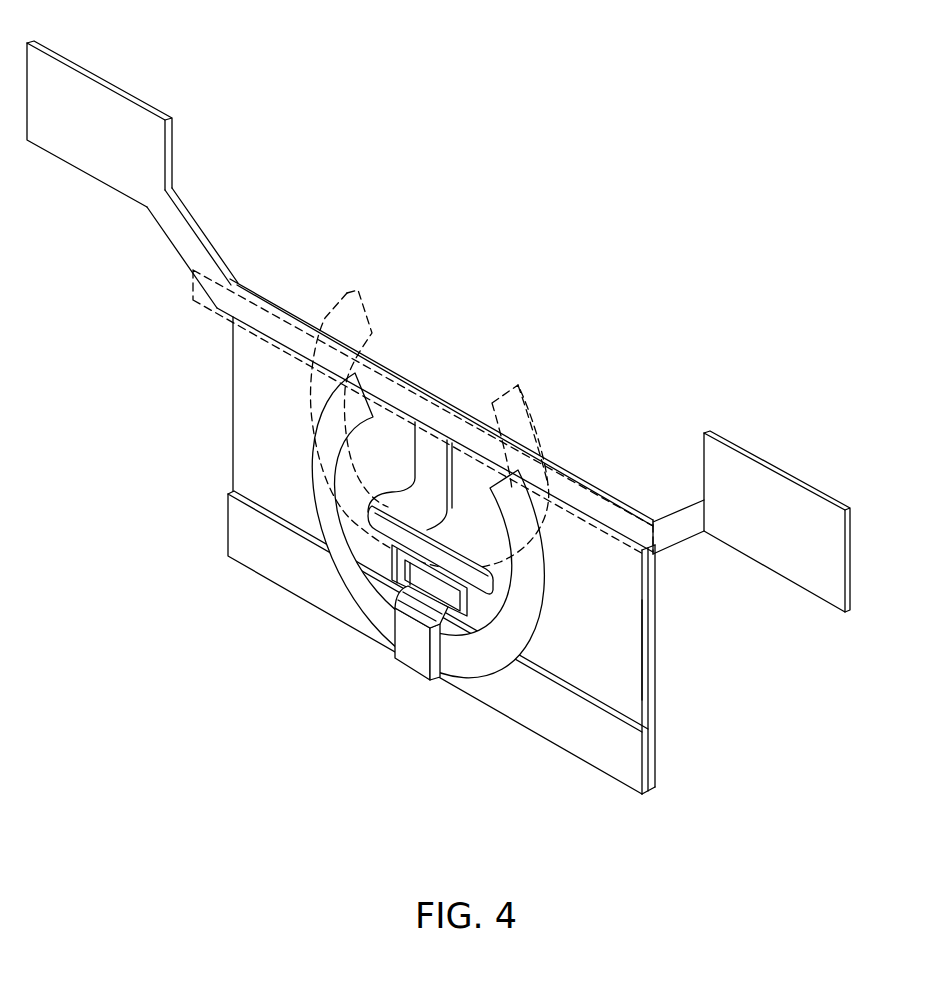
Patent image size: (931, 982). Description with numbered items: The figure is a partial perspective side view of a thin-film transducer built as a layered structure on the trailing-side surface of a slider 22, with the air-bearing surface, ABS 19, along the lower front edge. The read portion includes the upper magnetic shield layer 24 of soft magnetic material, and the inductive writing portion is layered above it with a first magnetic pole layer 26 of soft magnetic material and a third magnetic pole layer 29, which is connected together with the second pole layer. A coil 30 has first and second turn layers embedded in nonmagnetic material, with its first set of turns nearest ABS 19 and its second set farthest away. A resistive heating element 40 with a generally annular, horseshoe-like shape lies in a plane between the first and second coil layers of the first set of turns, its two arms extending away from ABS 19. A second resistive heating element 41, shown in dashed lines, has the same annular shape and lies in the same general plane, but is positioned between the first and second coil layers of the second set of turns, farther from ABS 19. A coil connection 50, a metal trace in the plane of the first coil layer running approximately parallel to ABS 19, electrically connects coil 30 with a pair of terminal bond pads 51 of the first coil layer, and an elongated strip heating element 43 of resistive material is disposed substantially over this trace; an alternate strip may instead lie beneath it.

The ABS 19 is at (598, 771).
The slider 22 is at (658, 641).
The upper (S2) magnetic shield layer 24 is at (609, 651).
The first magnetic pole layer 26 is at (518, 698).
The third magnetic pole layer 29 is at (415, 647).
The coil 30 is at (485, 595).
The resistive heating element 40 is at (320, 484).
The resistive heating element 41 is at (512, 403).
The heating element 43 is at (217, 312).
The coil connection 50 is at (420, 384).
The terminal bond pads 51 is at (123, 89).